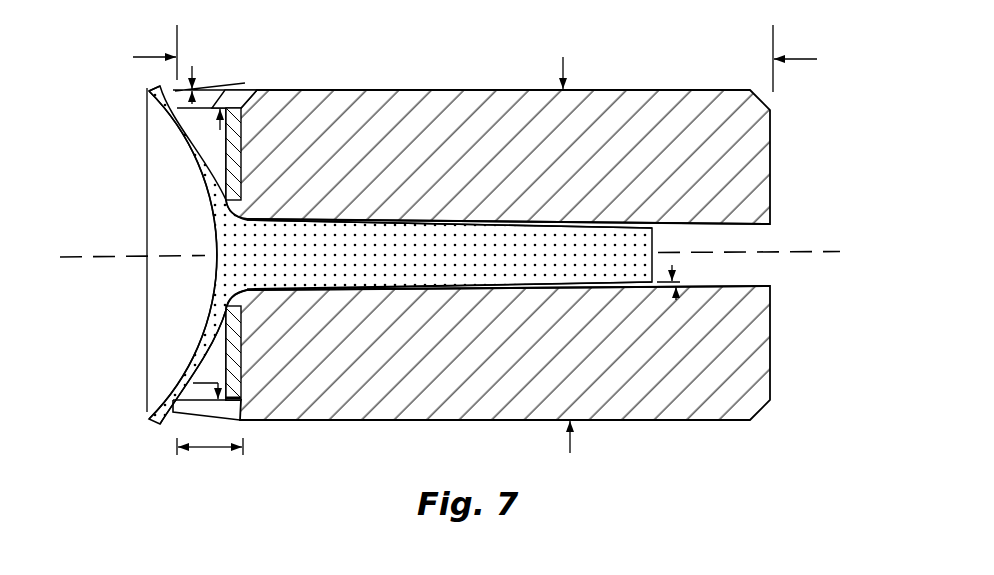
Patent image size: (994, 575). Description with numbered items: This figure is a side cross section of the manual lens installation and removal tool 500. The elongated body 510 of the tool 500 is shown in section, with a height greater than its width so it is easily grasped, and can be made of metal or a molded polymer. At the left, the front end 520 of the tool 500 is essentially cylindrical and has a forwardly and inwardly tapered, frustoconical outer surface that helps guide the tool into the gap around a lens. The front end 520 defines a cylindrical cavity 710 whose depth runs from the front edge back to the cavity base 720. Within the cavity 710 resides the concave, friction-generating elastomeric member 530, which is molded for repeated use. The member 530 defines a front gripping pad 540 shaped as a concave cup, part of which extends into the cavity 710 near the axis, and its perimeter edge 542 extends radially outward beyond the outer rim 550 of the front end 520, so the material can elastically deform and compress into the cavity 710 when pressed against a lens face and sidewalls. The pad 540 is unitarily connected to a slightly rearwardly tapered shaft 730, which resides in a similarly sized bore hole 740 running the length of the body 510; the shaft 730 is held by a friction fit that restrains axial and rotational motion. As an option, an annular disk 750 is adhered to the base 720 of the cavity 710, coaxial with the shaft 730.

The tool 500 is at (443, 248).
The body 510 is at (437, 264).
The front end 520 is at (222, 88).
The elastomeric member 530 is at (352, 250).
The front gripping pad 540 is at (181, 127).
The perimeter edge 542 is at (146, 90).
The outer rim 550 is at (186, 416).
The cylindrical cavity 710 is at (224, 363).
The cavity base 720 is at (242, 352).
The shaft 730 is at (390, 219).
The bore hole 740 is at (704, 268).
The annular disk 750 is at (241, 150).